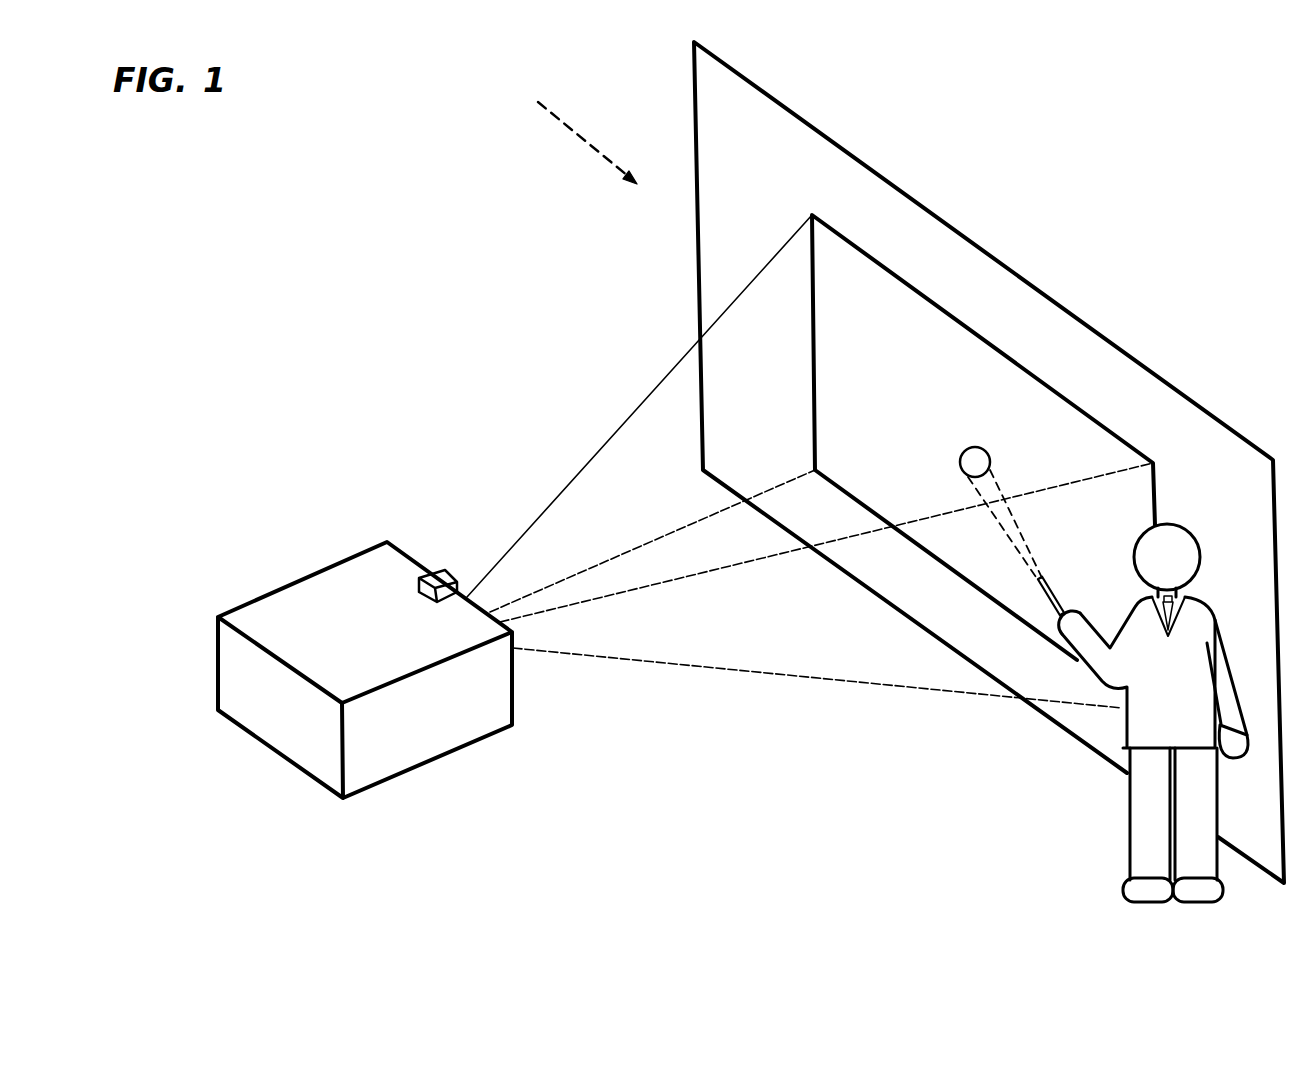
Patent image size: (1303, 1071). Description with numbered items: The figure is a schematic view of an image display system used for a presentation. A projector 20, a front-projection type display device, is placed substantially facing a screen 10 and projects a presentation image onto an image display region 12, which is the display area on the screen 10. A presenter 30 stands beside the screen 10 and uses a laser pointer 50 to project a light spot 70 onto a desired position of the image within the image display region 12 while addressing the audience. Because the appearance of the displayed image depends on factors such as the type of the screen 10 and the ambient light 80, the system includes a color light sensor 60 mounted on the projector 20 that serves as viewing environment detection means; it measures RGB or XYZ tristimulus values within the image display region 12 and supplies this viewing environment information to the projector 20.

The screen 10 is at (1020, 279).
The image display region 12 is at (1020, 366).
The projector 20 is at (492, 713).
The presenter 30 is at (1178, 522).
The laser pointer 50 is at (1061, 604).
The color light sensor 60 is at (438, 580).
The light spot 70 is at (990, 458).
The ambient light 80 is at (560, 120).